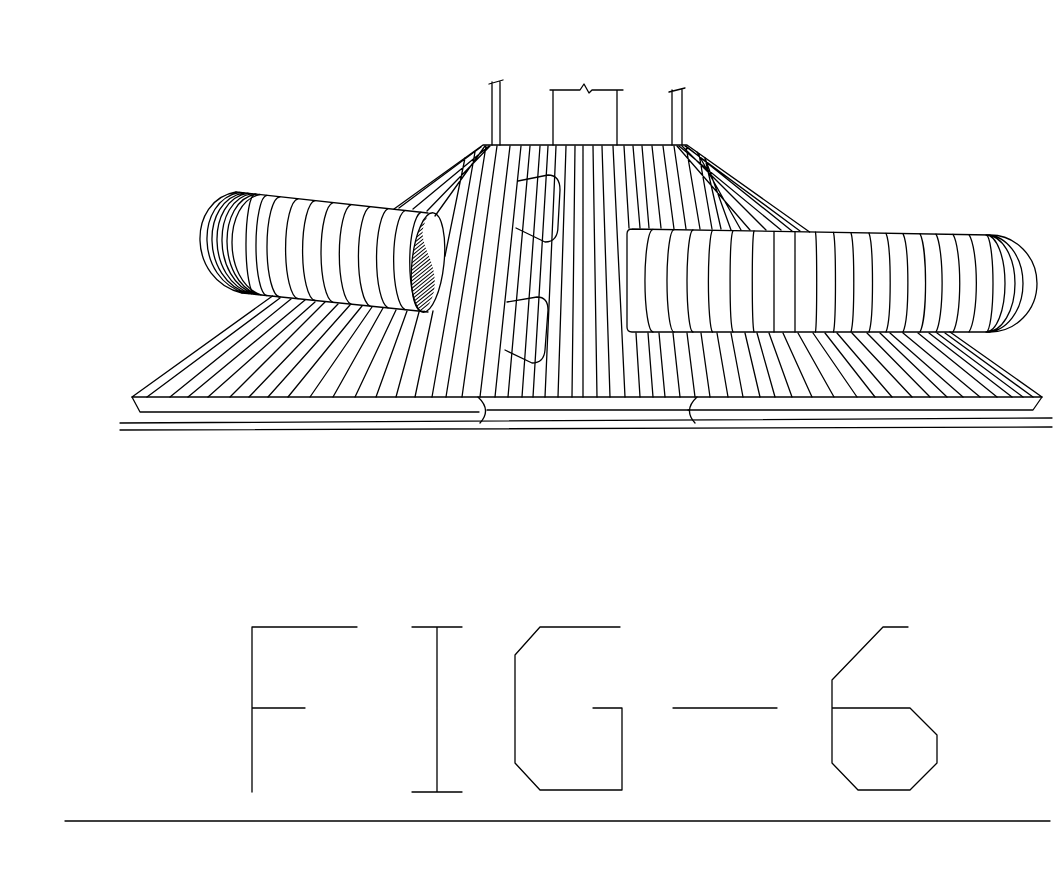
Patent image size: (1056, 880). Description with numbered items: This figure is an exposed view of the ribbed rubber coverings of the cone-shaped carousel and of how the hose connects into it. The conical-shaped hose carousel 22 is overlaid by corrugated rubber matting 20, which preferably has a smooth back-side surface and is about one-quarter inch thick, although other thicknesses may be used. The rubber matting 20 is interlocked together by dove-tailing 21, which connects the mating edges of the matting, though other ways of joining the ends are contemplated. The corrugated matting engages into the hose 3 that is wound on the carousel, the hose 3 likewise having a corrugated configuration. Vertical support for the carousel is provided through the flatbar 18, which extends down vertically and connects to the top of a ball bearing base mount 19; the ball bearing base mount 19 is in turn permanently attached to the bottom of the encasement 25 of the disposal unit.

The hose 3 is at (220, 205).
The flatbar 18 is at (553, 123).
The ball bearing base mount 19 is at (672, 413).
The corrugated rubber matting 20 is at (760, 197).
The dove-tailing 21 is at (527, 212).
The conical-shaped hose carousel 22 is at (408, 405).
The encasement 25 is at (922, 428).